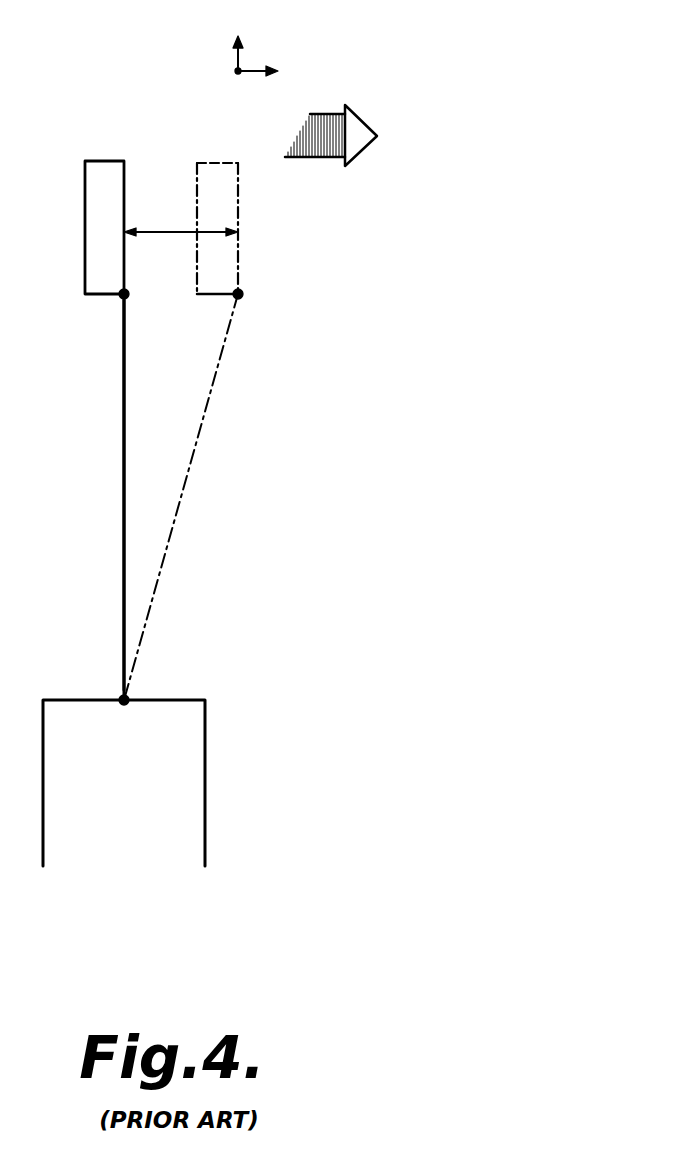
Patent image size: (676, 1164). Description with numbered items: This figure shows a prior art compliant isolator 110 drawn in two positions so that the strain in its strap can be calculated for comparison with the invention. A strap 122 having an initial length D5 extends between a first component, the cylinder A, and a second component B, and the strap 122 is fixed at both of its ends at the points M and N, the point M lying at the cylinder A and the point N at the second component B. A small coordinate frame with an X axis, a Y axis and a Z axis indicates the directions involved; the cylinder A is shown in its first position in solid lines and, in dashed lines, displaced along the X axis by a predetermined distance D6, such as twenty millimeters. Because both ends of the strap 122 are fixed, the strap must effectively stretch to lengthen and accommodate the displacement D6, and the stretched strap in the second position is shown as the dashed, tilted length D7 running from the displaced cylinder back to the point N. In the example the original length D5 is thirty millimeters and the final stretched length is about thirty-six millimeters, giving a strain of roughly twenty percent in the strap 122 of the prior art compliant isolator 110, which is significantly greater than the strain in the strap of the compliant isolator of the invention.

The prior art compliant isolator 110 is at (297, 530).
The strap 122 is at (122, 432).
The cylinder A is at (96, 185).
The second component B is at (192, 700).
The point M is at (120, 298).
The point N is at (121, 697).
The initial length D5 is at (106, 495).
The predetermined distance D6 is at (181, 219).
The tilted rod length D7 is at (181, 497).
The X axis X is at (268, 72).
The Y axis Y is at (238, 38).
The Z axis Z is at (227, 75).